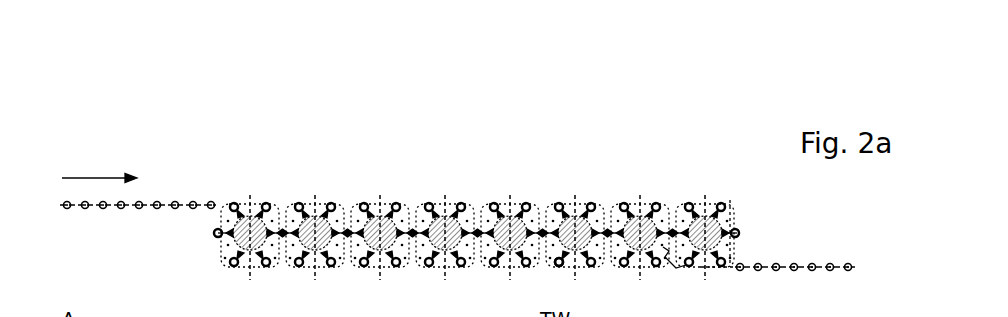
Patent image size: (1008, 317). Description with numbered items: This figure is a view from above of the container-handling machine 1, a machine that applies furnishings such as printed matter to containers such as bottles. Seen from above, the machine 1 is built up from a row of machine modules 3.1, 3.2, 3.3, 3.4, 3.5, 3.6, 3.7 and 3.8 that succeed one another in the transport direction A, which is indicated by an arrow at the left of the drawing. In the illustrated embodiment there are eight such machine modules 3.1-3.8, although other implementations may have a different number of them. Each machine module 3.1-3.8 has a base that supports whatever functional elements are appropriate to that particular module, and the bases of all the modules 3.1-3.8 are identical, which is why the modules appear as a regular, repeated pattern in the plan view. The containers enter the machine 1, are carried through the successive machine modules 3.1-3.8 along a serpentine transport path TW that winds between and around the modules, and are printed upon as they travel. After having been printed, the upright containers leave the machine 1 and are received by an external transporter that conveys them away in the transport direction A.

The container-handling machine 1 is at (457, 175).
The machine module 3.1 is at (227, 207).
The machine module 3.2 is at (335, 221).
The machine module 3.3 is at (410, 207).
The machine module 3.4 is at (466, 221).
The machine module 3.5 is at (540, 207).
The machine module 3.6 is at (595, 221).
The machine module 3.7 is at (669, 205).
The machine module 3.8 is at (726, 217).
The serpentine transport path TW is at (594, 284).
The transport direction A is at (99, 164).